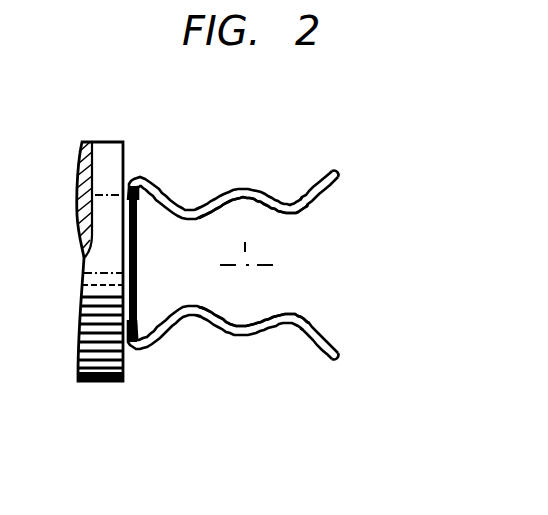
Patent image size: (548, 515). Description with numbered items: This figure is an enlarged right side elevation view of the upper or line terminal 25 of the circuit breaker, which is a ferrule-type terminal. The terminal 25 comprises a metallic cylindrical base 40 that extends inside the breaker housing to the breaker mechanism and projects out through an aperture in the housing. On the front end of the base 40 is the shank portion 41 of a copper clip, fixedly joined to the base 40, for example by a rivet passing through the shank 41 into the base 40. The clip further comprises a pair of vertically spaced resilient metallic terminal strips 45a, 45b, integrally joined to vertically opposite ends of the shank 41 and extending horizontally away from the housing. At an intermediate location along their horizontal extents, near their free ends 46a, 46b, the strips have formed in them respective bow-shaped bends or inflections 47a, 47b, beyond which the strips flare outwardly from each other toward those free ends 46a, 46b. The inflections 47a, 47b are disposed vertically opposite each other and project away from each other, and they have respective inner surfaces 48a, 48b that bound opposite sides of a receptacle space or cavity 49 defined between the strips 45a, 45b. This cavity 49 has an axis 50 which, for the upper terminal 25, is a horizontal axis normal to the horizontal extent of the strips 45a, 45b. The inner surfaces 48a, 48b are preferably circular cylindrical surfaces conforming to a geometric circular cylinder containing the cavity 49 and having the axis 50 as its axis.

The upper terminal 25 is at (258, 94).
The metallic cylindrical base 40 is at (110, 140).
The shank portion 41 is at (137, 275).
The terminal strip 45a is at (172, 195).
The terminal strip 45b is at (160, 342).
The free end 46a is at (340, 171).
The free end 46b is at (339, 358).
The bow-shaped inflection 47a is at (264, 194).
The bow-shaped inflection 47b is at (251, 341).
The inner surface 48a is at (243, 201).
The inner surface 48b is at (268, 318).
The receptacle cavity 49 is at (252, 306).
The axis 50 is at (247, 265).